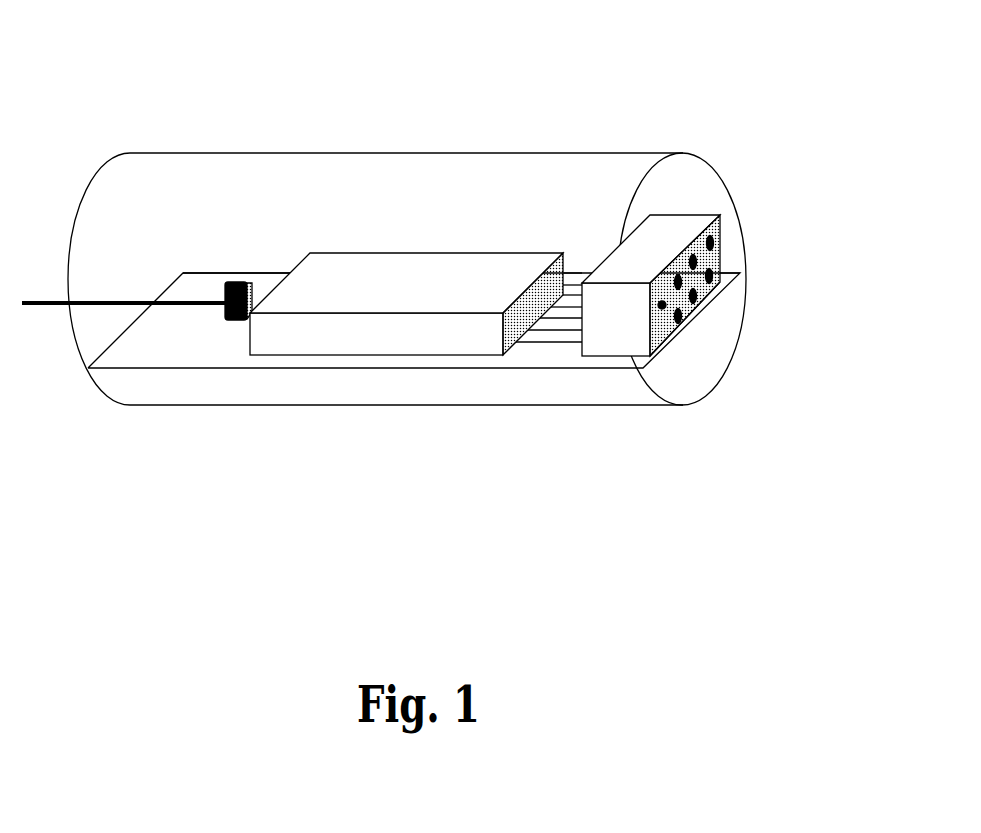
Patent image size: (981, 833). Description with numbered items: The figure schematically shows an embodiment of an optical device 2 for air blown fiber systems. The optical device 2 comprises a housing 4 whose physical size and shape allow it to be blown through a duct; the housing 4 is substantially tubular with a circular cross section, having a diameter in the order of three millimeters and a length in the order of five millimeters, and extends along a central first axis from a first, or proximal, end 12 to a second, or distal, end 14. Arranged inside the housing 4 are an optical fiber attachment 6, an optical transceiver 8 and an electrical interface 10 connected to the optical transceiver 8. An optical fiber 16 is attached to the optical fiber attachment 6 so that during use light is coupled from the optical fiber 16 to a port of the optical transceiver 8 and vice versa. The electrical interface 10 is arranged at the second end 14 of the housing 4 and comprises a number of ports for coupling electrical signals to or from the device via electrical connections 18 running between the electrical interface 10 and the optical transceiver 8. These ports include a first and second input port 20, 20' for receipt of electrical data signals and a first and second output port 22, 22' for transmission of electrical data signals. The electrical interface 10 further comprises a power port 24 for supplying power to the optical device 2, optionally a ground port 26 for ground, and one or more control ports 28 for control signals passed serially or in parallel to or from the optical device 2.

The optical device 2 is at (310, 137).
The housing 4 is at (435, 160).
The optical fiber attachment 6 is at (228, 322).
The optical transceiver 8 is at (422, 300).
The electrical interface 10 is at (692, 228).
The first end 12 is at (82, 197).
The second end 14 is at (662, 307).
The optical fiber 16 is at (53, 305).
The electrical connections 18 is at (543, 343).
The first input port 20 is at (753, 237).
The second input port 20' is at (770, 284).
The first output port 22 is at (711, 329).
The second output port 22' is at (742, 323).
The power port 24 is at (668, 280).
The ground port 26 is at (680, 316).
The control port 28 is at (673, 357).